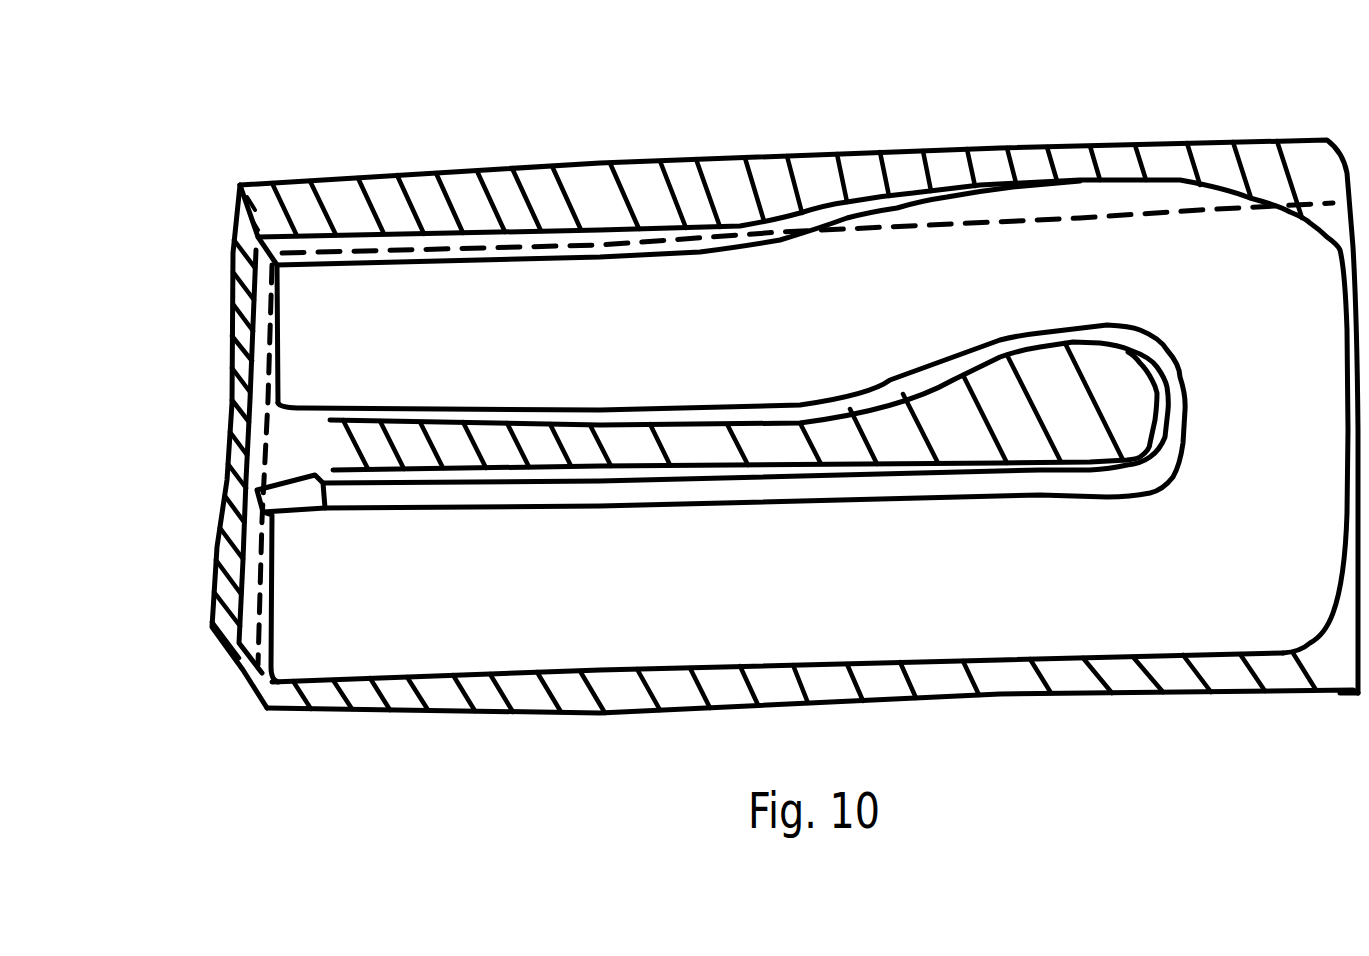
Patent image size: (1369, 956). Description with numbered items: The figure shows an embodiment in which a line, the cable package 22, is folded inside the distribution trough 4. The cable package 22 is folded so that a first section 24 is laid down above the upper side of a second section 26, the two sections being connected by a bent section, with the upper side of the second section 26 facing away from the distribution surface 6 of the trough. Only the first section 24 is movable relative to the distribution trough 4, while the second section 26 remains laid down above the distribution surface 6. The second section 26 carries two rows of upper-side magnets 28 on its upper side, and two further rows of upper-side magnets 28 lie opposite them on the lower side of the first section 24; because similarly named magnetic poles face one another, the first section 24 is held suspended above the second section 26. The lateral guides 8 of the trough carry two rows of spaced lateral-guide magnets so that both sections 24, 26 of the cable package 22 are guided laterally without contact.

The distribution trough 4 is at (217, 605).
The distribution surface 6 is at (260, 686).
The lateral guides 8 is at (430, 183).
The cable package 22 is at (750, 300).
The first section 24 is at (373, 338).
The second section 26 is at (323, 594).
The upper-side magnets 28 is at (347, 428).